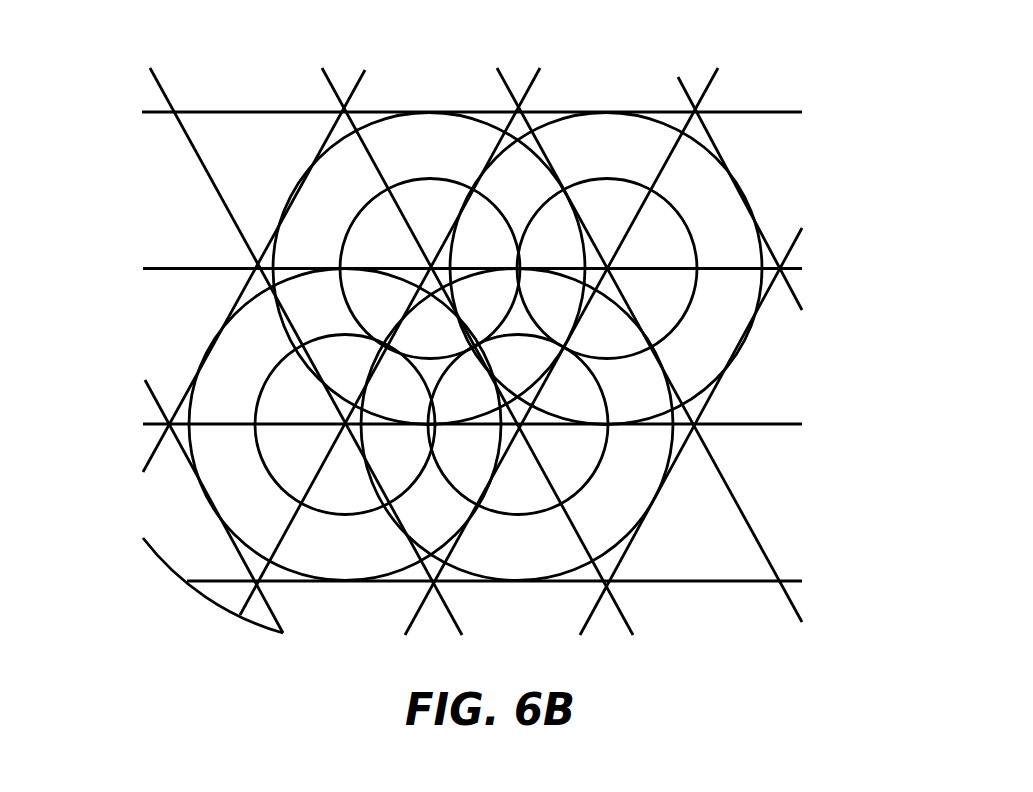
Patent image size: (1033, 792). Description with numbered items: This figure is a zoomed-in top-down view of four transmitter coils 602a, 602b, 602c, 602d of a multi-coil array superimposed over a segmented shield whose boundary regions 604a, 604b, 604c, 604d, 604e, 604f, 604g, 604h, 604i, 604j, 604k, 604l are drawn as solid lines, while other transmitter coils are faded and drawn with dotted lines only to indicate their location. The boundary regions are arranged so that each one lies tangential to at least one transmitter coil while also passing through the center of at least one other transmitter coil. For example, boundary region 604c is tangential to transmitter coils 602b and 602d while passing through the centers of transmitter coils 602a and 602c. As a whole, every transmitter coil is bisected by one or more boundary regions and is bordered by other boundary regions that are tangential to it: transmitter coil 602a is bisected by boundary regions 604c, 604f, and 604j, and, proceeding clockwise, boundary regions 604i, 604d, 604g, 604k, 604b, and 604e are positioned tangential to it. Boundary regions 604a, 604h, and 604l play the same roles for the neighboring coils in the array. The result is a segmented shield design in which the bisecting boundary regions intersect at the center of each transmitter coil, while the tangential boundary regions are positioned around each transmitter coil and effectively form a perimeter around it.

The transmitter coil 602a is at (477, 112).
The transmitter coil 602b is at (190, 387).
The transmitter coil 602c is at (619, 545).
The transmitter coil 602d is at (652, 112).
The boundary region 604a is at (143, 400).
The boundary region 604b is at (193, 48).
The boundary region 604c is at (364, 48).
The boundary region 604d is at (500, 67).
The boundary region 604e is at (143, 470).
The boundary region 604f is at (240, 612).
The boundary region 604g is at (405, 623).
The boundary region 604h is at (585, 623).
The boundary region 604i is at (790, 112).
The boundary region 604j is at (790, 269).
The boundary region 604k is at (790, 424).
The boundary region 604l is at (790, 581).